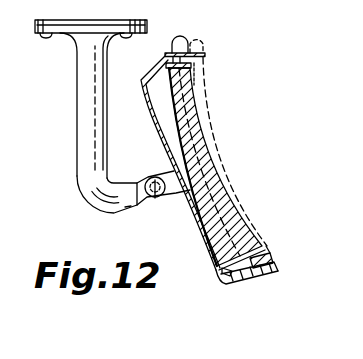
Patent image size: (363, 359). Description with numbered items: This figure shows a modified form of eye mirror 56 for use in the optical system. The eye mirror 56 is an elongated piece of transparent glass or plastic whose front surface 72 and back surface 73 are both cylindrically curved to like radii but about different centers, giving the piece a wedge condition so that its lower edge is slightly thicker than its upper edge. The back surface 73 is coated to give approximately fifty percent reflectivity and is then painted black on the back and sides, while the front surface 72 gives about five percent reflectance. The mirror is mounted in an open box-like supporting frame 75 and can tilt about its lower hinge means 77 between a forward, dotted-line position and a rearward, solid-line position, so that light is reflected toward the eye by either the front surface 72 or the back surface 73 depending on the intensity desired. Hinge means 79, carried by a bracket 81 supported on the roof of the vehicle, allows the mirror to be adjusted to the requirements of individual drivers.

The bracket 81 is at (85, 104).
The hinge means 79 is at (152, 198).
The back surface 73 is at (180, 89).
The front surface 72 is at (209, 127).
The eye mirror 56 is at (233, 230).
The lower hinge means 77 is at (266, 272).
The supporting frame 75 is at (234, 284).